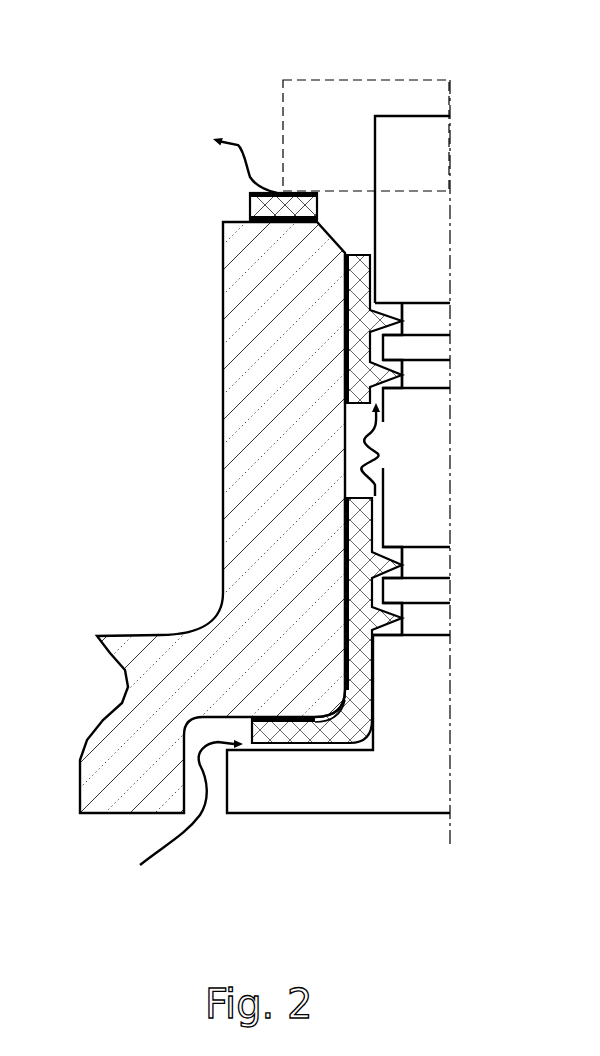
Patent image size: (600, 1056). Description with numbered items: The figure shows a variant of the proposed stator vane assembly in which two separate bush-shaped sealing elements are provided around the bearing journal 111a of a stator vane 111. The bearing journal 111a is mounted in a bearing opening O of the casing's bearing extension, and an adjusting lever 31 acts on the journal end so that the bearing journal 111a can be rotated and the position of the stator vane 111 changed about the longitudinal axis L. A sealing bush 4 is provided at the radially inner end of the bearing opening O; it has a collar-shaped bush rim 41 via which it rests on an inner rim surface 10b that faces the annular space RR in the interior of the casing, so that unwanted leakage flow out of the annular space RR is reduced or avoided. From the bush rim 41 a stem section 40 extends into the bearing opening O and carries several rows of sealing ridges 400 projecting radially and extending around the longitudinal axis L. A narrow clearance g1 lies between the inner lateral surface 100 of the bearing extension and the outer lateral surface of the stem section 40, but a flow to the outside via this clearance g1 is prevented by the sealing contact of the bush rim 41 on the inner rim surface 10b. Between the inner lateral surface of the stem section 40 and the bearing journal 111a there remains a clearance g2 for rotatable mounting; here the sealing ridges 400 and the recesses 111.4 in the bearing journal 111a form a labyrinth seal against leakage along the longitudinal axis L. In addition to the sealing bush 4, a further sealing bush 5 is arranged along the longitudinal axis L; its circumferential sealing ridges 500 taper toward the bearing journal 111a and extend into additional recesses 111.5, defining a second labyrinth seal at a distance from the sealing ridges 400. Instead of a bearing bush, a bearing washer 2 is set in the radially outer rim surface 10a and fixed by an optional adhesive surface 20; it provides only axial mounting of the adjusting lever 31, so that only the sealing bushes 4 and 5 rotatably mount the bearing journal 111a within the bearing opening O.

The bearing washer 2 is at (252, 210).
The adhesive surface 20 is at (274, 231).
The further sealing bush 5 is at (343, 285).
The inner lateral surface 100 is at (353, 418).
The clearance g1 is at (338, 525).
The sealing bush 4 is at (355, 618).
The inner rim surface 10b is at (205, 733).
The bush rim 41 is at (300, 730).
The annular space RR is at (210, 838).
The stator vane 111 is at (436, 830).
The recesses 111.4 is at (450, 573).
The recesses 111.5 is at (442, 329).
The sealing ridges 400 is at (411, 562).
The sealing ridges 500 is at (405, 312).
The stem section 40 is at (379, 518).
The bearing opening O is at (380, 453).
The radially outer rim surface 10a is at (322, 224).
The bearing journal 111a is at (435, 160).
The longitudinal axis L is at (452, 93).
The adjusting lever 31 is at (373, 84).
The clearance g2 is at (386, 680).